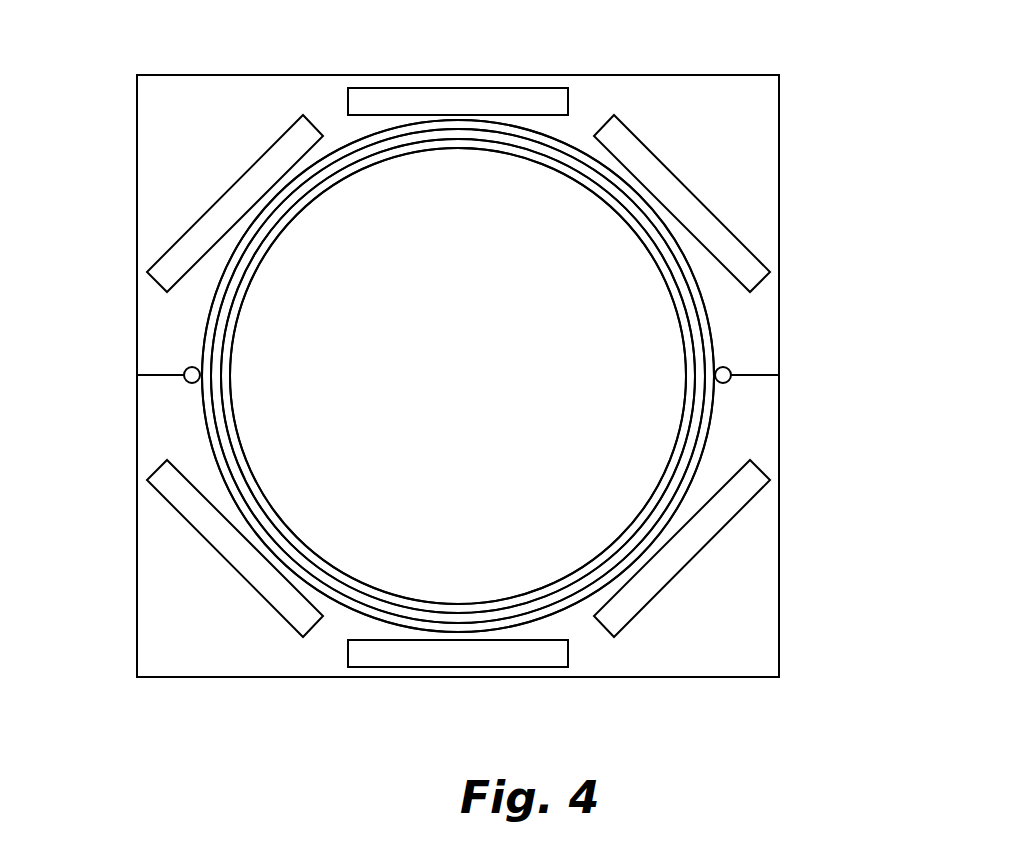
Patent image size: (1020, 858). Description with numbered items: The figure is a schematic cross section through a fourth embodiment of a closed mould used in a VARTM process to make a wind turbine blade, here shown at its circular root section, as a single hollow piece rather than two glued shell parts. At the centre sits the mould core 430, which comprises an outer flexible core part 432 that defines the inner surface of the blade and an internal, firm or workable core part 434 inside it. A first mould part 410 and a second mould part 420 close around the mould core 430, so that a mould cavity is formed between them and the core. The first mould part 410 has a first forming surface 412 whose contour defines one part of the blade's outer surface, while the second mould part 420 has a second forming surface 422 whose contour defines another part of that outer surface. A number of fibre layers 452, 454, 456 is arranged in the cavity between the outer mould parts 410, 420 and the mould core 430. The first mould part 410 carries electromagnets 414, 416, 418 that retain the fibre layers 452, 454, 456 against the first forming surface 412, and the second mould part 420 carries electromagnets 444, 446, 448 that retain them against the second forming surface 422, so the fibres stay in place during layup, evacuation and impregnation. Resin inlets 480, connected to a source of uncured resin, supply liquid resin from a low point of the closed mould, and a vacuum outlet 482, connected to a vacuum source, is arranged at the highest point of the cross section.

The first mould part 410 is at (668, 665).
The first forming surface 412 is at (545, 617).
The electromagnet 414 is at (197, 522).
The electromagnet 416 is at (483, 658).
The electromagnet 418 is at (690, 538).
The second mould part 420 is at (597, 88).
The second forming surface 422 is at (407, 130).
The mould core 430 is at (680, 326).
The outer flexible core part 432 is at (664, 271).
The internal core part 434 is at (603, 247).
The electromagnet 444 is at (177, 258).
The electromagnet 446 is at (360, 101).
The electromagnet 448 is at (663, 147).
The fibre layer 452 is at (327, 595).
The fibre layer 454 is at (362, 598).
The fibre layer 456 is at (402, 605).
The resin inlet 480 is at (192, 380).
The vacuum outlet 482 is at (723, 384).